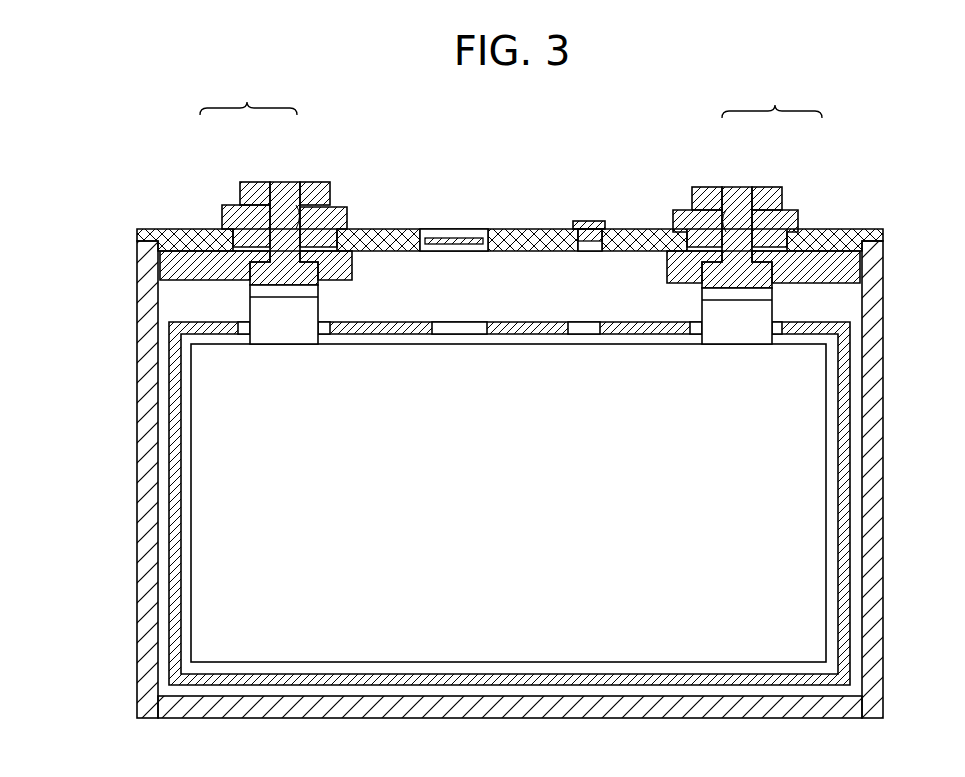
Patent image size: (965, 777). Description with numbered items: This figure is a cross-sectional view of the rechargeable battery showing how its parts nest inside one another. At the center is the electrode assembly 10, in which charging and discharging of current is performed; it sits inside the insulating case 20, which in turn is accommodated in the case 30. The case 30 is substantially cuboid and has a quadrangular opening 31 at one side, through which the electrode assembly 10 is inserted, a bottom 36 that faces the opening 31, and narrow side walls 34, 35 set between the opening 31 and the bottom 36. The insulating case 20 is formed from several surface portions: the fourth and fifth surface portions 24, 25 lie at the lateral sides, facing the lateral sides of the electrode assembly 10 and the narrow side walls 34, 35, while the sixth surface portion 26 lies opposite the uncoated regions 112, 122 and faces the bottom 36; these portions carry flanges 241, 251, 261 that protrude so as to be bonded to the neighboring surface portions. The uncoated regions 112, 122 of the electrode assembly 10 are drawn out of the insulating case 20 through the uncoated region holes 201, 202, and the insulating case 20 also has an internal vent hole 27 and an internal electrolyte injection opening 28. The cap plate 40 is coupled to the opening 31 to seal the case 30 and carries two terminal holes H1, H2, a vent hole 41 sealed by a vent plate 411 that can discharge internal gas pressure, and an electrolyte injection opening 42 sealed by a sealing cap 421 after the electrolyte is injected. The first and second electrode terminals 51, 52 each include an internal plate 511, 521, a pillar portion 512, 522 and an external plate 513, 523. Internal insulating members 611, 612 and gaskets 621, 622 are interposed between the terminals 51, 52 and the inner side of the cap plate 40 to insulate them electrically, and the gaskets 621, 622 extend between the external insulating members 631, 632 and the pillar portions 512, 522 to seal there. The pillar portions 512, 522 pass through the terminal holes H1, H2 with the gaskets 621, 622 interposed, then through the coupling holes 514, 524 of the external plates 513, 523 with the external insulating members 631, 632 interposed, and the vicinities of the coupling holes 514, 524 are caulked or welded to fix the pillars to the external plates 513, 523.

The electrode assembly 10 is at (826, 372).
The insulating case 20 is at (510, 510).
The fourth surface portion 24 is at (176, 560).
The fifth surface portion 25 is at (845, 623).
The sixth surface portion 26 is at (690, 677).
The internal vent hole 27 is at (460, 328).
The internal electrolyte injection opening 28 is at (583, 328).
The uncoated region hole 201 is at (333, 326).
The uncoated region hole 202 is at (695, 324).
The flange 241 is at (165, 386).
The flange 251 is at (855, 466).
The flange 261 is at (578, 681).
The case 30 is at (523, 505).
The opening 31 is at (847, 232).
The narrow side wall 34 is at (150, 492).
The narrow side wall 35 is at (880, 576).
The bottom 36 is at (480, 710).
The cap plate 40 is at (182, 228).
The vent hole 41 is at (454, 213).
The vent plate 411 is at (470, 240).
The electrolyte injection opening 42 is at (600, 236).
The sealing cap 421 is at (590, 222).
The first electrode terminal 51 is at (302, 182).
The internal plate 511 is at (213, 237).
The pillar portion 512 is at (284, 193).
The external plate 513 is at (250, 193).
The coupling hole 514 is at (297, 190).
The terminal hole H1 is at (298, 213).
The second electrode terminal 52 is at (723, 185).
The internal plate 521 is at (800, 228).
The pillar portion 522 is at (740, 197).
The external plate 523 is at (768, 197).
The coupling hole 524 is at (728, 190).
The terminal hole H2 is at (730, 213).
The internal insulating member 611 is at (180, 266).
The internal insulating member 612 is at (845, 270).
The gasket 621 is at (323, 207).
The gasket 622 is at (718, 217).
The external insulating member 631 is at (337, 218).
The external insulating member 632 is at (678, 217).
The uncoated region 112 is at (242, 289).
The uncoated region 122 is at (757, 310).